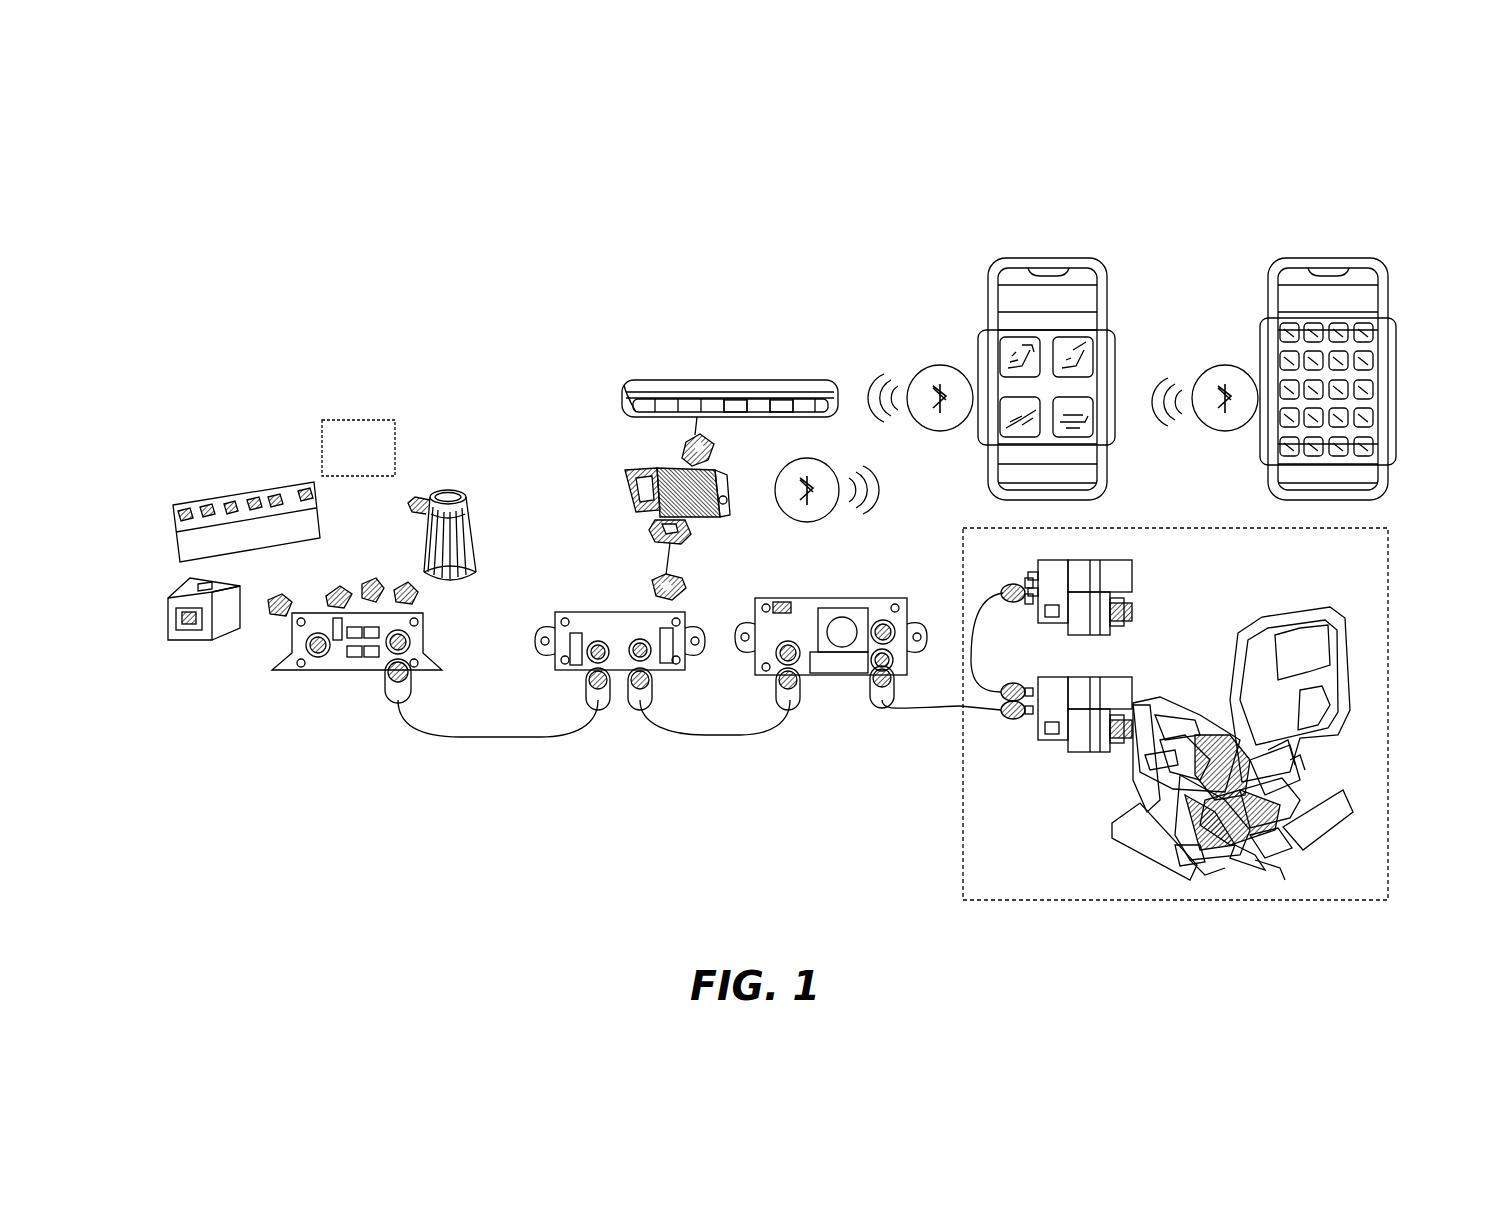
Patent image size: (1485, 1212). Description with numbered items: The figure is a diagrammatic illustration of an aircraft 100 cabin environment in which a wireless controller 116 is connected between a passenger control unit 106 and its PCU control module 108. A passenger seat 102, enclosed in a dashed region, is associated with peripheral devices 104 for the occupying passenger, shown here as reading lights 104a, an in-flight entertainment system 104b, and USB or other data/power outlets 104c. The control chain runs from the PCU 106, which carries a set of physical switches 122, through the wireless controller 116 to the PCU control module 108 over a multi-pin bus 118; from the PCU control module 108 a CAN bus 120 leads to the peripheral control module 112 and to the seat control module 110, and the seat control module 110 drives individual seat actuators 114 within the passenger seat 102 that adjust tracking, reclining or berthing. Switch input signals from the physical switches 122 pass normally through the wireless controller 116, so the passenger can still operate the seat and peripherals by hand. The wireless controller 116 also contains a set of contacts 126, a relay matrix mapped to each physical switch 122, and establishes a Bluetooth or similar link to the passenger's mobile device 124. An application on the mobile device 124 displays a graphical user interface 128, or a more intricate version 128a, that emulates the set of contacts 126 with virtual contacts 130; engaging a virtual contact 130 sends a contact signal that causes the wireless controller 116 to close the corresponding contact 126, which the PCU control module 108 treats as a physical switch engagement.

The aircraft 100 is at (218, 166).
The passenger seat 102 is at (1017, 893).
The peripheral devices 104 is at (186, 372).
The reading lights 104a is at (458, 546).
The in-flight entertainment systems 104b is at (324, 437).
The USB or other data/power outlets 104c is at (198, 632).
The passenger control unit 106 is at (703, 387).
The PCU control module 108 is at (533, 633).
The seat control module 110 is at (821, 660).
The peripheral control module 112 is at (333, 665).
The seat actuators 114 is at (1112, 572).
The wireless controller 116 is at (652, 500).
The multi-pin bus 118 is at (690, 435).
The controller area network bus 120 is at (461, 738).
The physical switches 122 is at (742, 407).
The mobile device 124 is at (1001, 262).
The set of contacts 126 is at (722, 505).
The graphical user interface 128 is at (1118, 346).
The graphical user interface 128a is at (1258, 340).
The virtual contacts 130 is at (1007, 346).